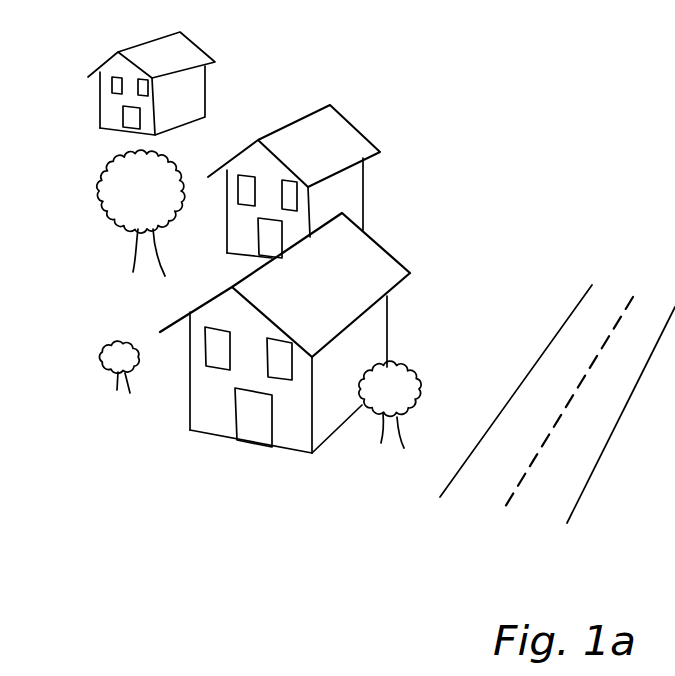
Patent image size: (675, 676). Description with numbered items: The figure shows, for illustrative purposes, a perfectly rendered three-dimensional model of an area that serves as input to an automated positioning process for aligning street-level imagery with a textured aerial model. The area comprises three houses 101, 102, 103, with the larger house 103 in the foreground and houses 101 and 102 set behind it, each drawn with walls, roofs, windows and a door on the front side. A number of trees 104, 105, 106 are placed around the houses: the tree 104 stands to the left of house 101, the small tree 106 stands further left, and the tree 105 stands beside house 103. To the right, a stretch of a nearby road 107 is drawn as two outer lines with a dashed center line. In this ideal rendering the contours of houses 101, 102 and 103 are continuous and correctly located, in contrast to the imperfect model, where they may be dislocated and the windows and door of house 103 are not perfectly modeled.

The house 101 is at (338, 140).
The house 102 is at (192, 55).
The house 103 is at (363, 272).
The tree 104 is at (120, 190).
The tree 105 is at (395, 383).
The tree 106 is at (120, 353).
The road 107 is at (567, 340).